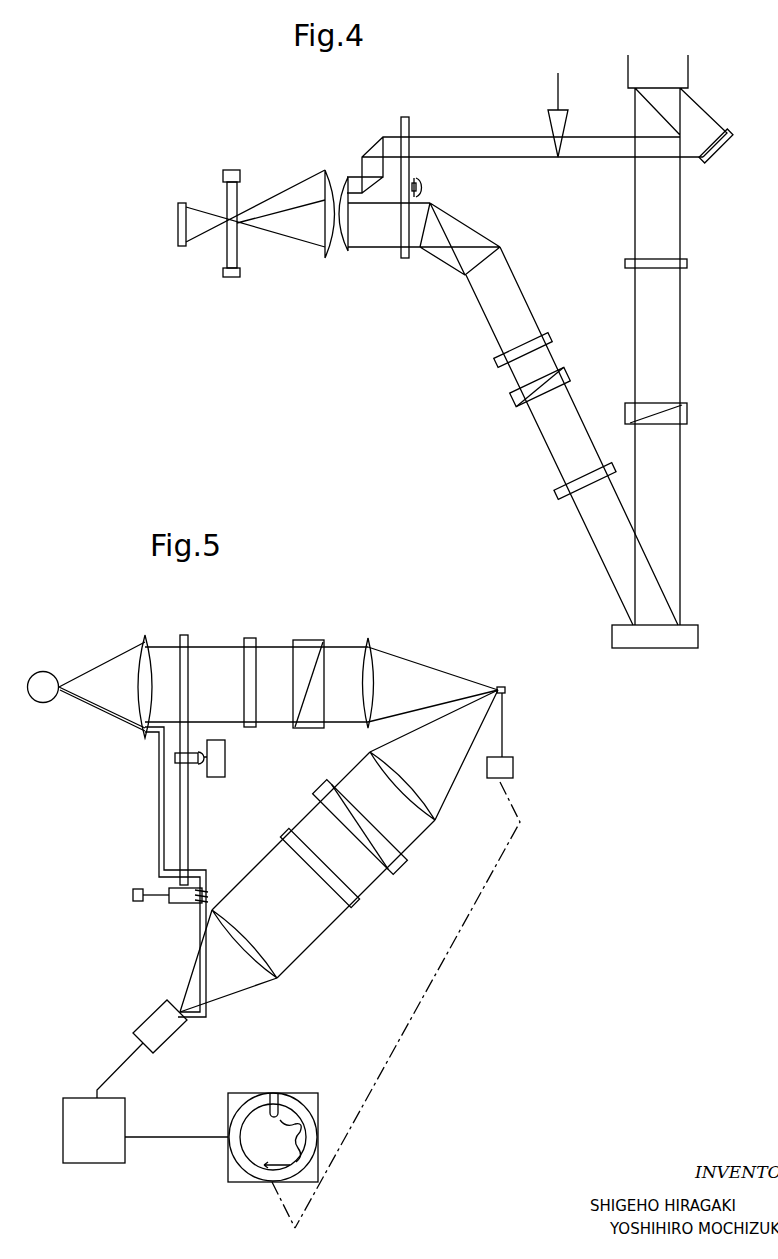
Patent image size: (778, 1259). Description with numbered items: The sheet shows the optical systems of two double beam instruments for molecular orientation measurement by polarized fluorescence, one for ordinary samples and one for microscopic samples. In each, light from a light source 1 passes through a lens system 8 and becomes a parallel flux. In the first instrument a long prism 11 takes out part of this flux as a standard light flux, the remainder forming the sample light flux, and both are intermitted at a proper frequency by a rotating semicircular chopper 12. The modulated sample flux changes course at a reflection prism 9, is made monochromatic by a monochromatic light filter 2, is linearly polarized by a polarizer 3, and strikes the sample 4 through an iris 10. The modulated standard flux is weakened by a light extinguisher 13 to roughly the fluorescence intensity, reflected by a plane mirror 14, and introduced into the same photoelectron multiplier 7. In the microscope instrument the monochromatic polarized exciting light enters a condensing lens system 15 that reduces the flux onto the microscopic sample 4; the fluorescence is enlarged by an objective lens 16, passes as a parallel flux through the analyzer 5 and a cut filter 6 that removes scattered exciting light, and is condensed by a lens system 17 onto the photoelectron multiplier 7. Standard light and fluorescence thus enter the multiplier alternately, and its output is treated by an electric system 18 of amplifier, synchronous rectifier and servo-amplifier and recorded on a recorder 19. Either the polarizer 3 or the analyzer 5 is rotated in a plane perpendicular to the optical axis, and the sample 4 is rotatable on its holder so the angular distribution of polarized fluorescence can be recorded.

In FIG. 4, the light source 1 is at (233, 277).
In FIG. 5, the light source 1 is at (48, 672).
In FIG. 4, the monochromatic light filter 2 is at (495, 360).
In FIG. 5, the monochromatic light filter 2 is at (250, 638).
In FIG. 4, the polarizer 3 is at (512, 397).
In FIG. 5, the polarizer 3 is at (307, 641).
In FIG. 4, the sample 4 is at (657, 648).
In FIG. 5, the sample 4 is at (507, 687).
In FIG. 4, the analyzer 5 is at (687, 413).
In FIG. 5, the analyzer 5 is at (393, 862).
In FIG. 4, the cut filter 6 is at (687, 263).
In FIG. 5, the cut filter 6 is at (355, 903).
In FIG. 4, the photoelectron multiplier 7 is at (688, 76).
In FIG. 5, the photoelectron multiplier 7 is at (168, 1037).
In FIG. 4, the lens system 8 is at (333, 261).
In FIG. 5, the lens system 8 is at (146, 640).
In FIG. 4, the reflection prism 9 is at (448, 260).
In FIG. 4, the iris 10 is at (552, 497).
In FIG. 4, the long prism 11 is at (372, 147).
In FIG. 4, the chopper 12 is at (400, 262).
In FIG. 5, the chopper 12 is at (192, 805).
In FIG. 4, the light extinguisher 13 is at (550, 118).
In FIG. 5, the light extinguisher 13 is at (133, 897).
In FIG. 4, the mirror 14 is at (717, 161).
In FIG. 5, the lens system 15 is at (368, 638).
In FIG. 5, the collimating lens 16 is at (433, 822).
In FIG. 5, the lens system 17 is at (275, 980).
In FIG. 5, the electric system 18 is at (90, 1158).
In FIG. 5, the recorder 19 is at (238, 1180).